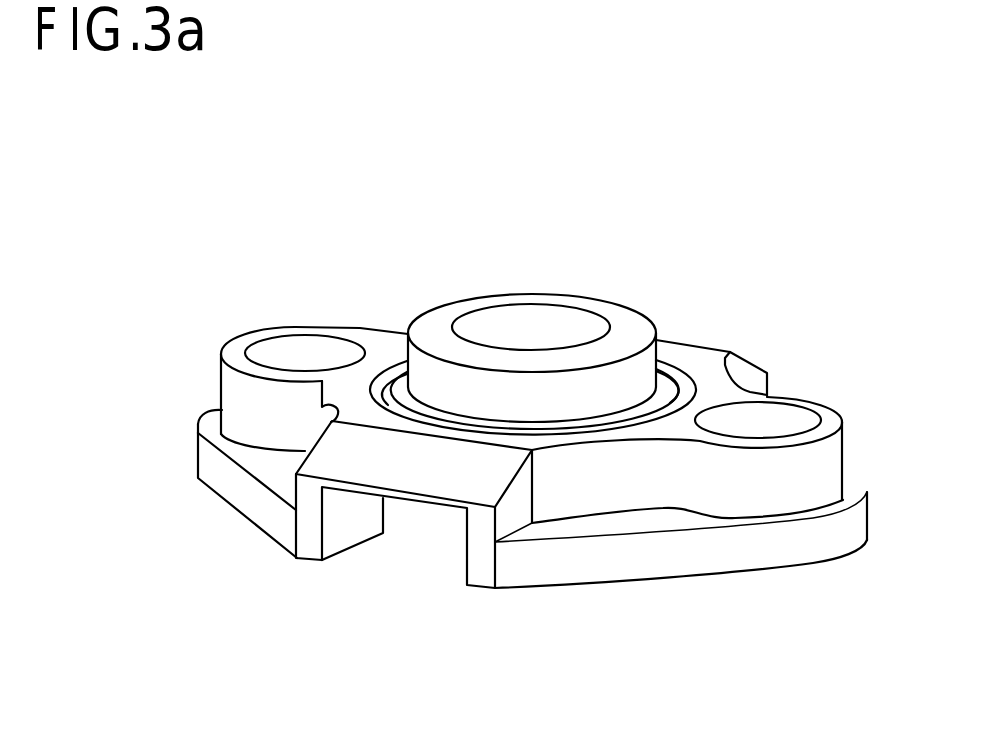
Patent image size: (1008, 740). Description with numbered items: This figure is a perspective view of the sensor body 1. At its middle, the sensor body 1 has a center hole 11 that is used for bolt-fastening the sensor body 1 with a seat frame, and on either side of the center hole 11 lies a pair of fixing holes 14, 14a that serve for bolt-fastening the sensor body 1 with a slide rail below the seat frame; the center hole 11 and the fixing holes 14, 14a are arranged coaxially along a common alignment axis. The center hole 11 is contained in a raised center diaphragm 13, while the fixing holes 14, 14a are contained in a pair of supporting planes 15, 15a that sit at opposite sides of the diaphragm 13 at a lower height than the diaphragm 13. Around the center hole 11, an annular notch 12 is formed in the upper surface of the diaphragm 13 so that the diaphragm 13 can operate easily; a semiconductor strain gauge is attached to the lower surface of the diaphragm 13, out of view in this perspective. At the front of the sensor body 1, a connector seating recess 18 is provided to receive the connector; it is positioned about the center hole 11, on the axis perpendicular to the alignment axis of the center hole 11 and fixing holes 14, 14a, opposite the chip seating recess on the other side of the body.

The sensor body 1 is at (206, 516).
The center hole 11 is at (490, 322).
The annular notch 12 is at (666, 376).
The center diaphragm 13 is at (592, 450).
The fixing hole 14 is at (306, 343).
The fixing hole 14a is at (788, 413).
The supporting plane 15 is at (269, 538).
The supporting plane 15a is at (733, 575).
The connector seating recess 18 is at (427, 532).